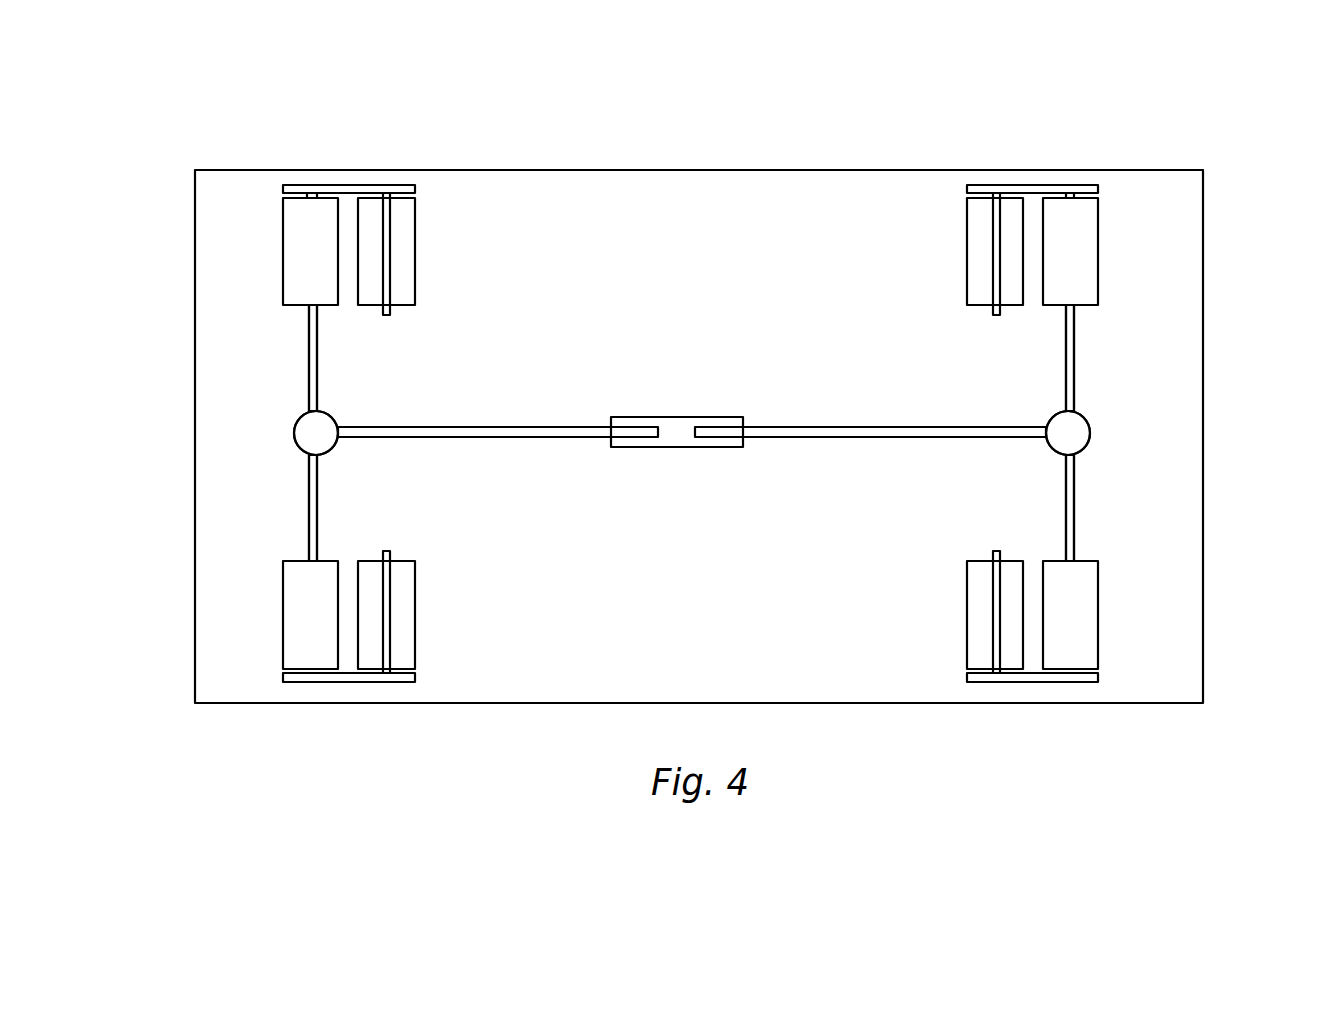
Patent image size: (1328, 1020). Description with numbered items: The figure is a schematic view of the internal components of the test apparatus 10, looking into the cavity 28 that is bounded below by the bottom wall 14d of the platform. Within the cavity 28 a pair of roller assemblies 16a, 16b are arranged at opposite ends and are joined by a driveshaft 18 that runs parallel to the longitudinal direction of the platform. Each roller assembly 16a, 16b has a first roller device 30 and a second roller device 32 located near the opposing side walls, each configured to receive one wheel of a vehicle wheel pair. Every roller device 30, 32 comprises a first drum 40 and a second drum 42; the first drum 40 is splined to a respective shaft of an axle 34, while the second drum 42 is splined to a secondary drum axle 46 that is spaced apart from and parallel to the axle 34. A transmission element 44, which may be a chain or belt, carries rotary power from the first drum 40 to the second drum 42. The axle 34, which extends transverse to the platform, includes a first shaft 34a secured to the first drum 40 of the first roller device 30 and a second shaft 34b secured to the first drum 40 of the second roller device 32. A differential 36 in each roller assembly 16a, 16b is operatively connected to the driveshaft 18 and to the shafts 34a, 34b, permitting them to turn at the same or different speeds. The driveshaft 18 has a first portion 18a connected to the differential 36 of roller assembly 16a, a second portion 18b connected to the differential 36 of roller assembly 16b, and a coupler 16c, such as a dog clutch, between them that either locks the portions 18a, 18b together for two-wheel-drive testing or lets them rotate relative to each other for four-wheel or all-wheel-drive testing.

The test apparatus 10 is at (660, 100).
The bottom wall 14d is at (825, 703).
The roller assembly 16a is at (252, 406).
The roller assembly 16b is at (1133, 421).
The coupler 16c is at (700, 404).
The driveshaft 18 is at (692, 441).
The first portion 18a is at (560, 425).
The second portion 18b is at (893, 425).
The cavity 28 is at (802, 248).
The first roller device 30 is at (712, 188).
The second roller device 32 is at (272, 622).
The axle 34 is at (701, 411).
The first shaft 34a is at (308, 494).
The second shaft 34b is at (308, 327).
The differential 36 is at (294, 437).
The first drum 40 is at (308, 222).
The second drum 42 is at (405, 220).
The transmission element 44 is at (398, 185).
The secondary drum axle 46 is at (388, 268).